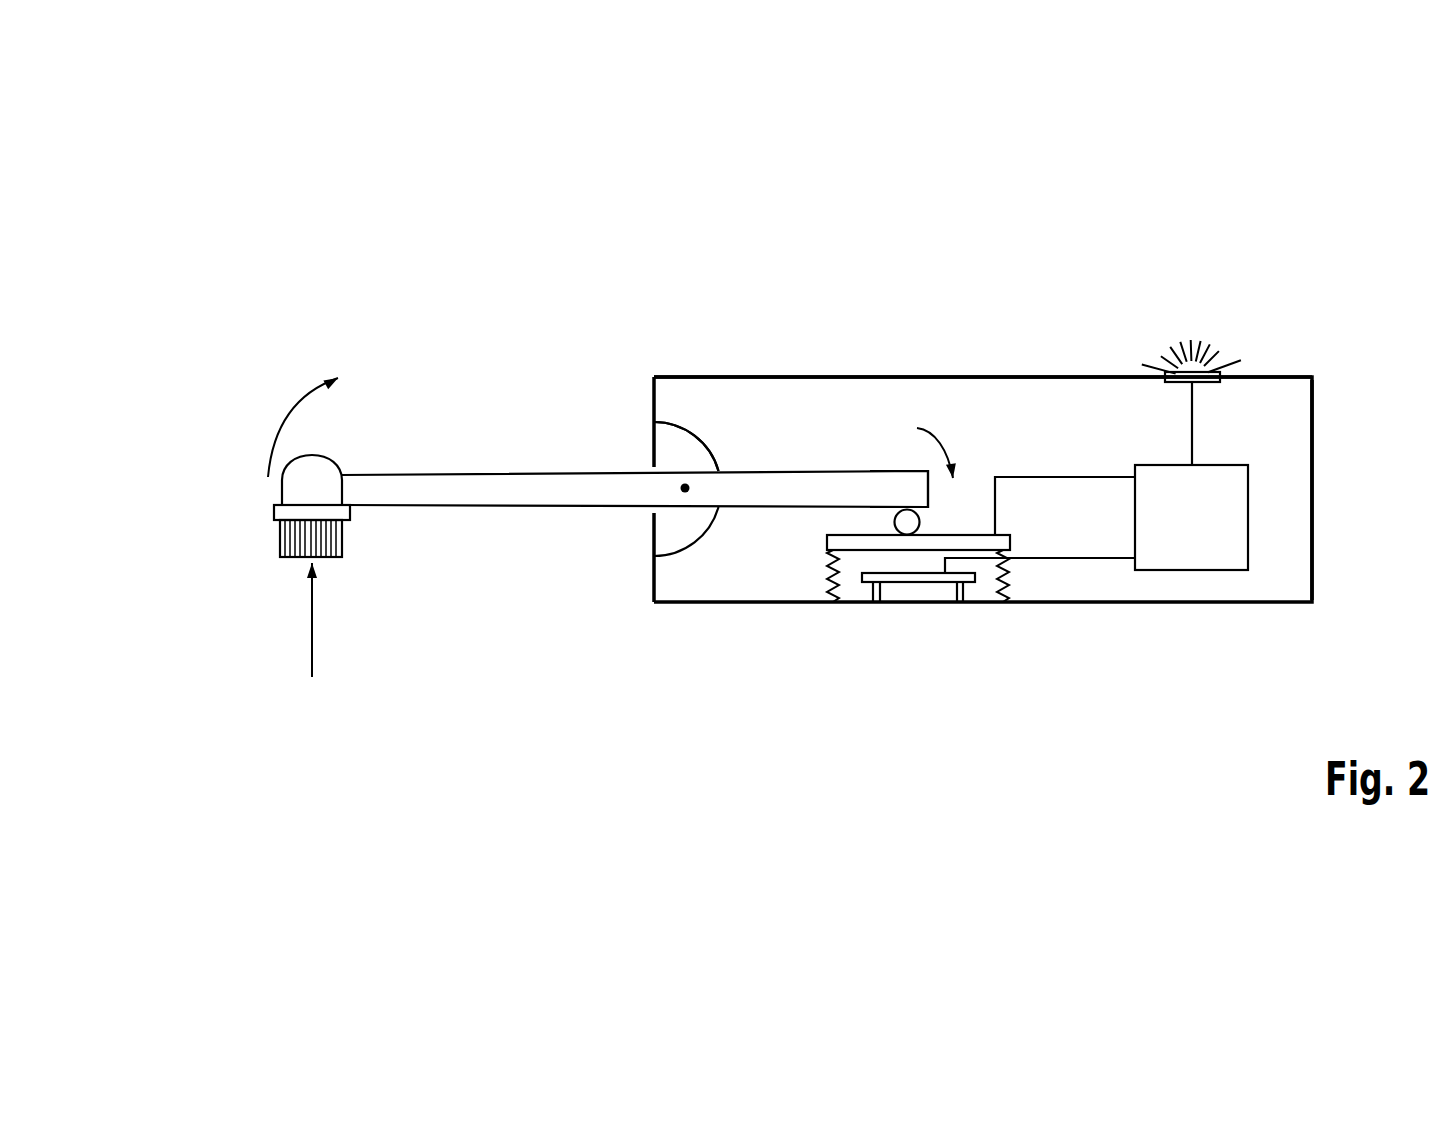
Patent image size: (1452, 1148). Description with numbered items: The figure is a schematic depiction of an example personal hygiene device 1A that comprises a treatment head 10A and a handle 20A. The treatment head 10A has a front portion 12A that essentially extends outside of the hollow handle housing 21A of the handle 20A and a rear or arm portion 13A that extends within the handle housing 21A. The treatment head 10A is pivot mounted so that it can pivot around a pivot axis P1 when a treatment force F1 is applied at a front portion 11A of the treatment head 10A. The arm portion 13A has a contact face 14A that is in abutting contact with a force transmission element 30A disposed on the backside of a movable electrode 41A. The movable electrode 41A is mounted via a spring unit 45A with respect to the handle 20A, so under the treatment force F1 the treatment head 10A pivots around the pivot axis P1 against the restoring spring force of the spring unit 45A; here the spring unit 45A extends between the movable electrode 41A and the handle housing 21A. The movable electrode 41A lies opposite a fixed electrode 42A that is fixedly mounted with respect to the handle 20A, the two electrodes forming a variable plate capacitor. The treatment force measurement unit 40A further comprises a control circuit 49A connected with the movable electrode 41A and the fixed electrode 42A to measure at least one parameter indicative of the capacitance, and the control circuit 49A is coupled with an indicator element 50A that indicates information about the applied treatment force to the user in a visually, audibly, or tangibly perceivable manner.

The personal hygiene device 1A is at (780, 345).
The treatment head 10A is at (530, 448).
The front portion 11A is at (262, 517).
The front portion 12A is at (556, 482).
The arm portion 13A is at (768, 478).
The contact face 14A is at (886, 507).
The handle 20A is at (1028, 378).
The handle housing 21A is at (1312, 417).
The force transmission element 30A is at (920, 522).
The treatment force measurement unit 40A is at (822, 620).
The movable electrode 41A is at (827, 542).
The fixed electrode 42A is at (903, 580).
The spring unit 45A is at (829, 580).
The control circuit 49A is at (1248, 528).
The indicator element 50A is at (1205, 382).
The pivot axis P1 is at (685, 493).
The treatment force F1 is at (312, 668).